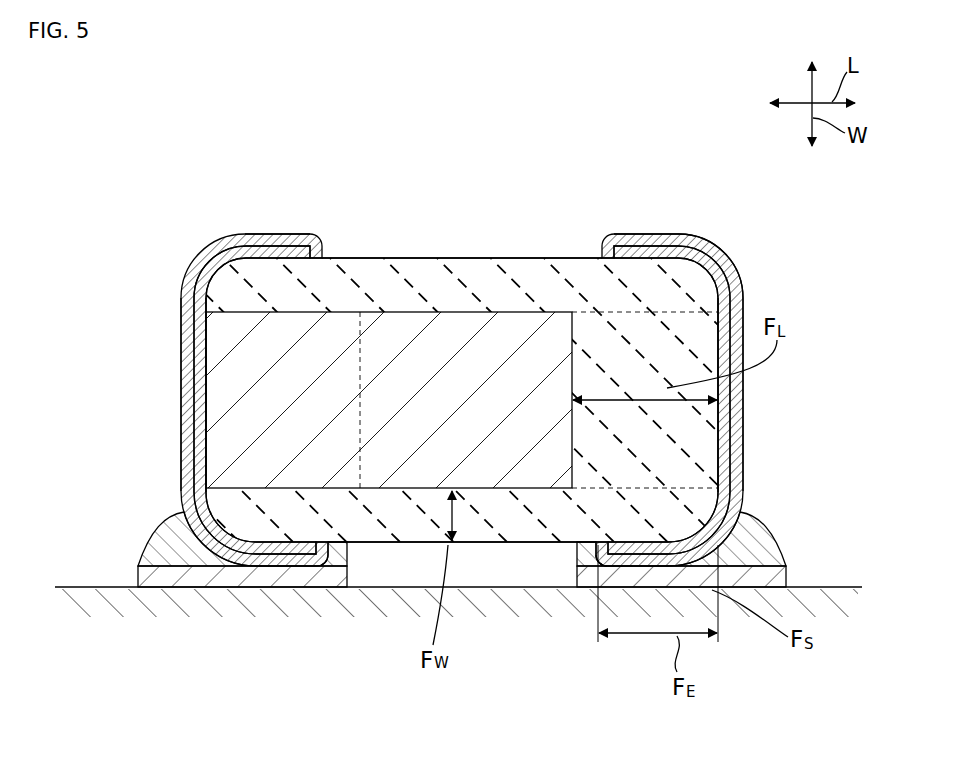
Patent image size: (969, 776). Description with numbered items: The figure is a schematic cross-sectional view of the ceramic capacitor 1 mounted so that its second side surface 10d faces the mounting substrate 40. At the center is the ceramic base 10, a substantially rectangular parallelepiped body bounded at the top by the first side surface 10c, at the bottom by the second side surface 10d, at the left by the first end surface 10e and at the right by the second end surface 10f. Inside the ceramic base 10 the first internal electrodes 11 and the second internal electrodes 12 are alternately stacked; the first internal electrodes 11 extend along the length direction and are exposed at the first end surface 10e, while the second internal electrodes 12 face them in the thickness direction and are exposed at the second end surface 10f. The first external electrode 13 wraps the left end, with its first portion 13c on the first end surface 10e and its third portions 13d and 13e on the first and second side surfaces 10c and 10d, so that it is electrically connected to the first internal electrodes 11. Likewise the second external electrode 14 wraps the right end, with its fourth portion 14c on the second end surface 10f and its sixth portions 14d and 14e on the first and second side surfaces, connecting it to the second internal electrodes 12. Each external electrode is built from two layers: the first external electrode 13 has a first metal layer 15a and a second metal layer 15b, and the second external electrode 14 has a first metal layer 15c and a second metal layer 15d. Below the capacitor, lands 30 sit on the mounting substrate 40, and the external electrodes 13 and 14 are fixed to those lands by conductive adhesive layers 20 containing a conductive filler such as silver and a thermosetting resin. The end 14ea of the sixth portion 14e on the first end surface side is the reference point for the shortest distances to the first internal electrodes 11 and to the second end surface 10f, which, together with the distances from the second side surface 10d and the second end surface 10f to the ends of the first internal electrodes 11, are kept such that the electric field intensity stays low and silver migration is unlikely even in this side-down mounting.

The ceramic capacitor 1 is at (572, 188).
The ceramic base 10 is at (508, 242).
The first side surface 10c is at (370, 258).
The second side surface 10d is at (497, 545).
The first end surface 10e is at (205, 438).
The second end surface 10f is at (720, 382).
The first internal electrodes 11 is at (537, 490).
The second internal electrodes 12 is at (733, 267).
The first external electrode 13 is at (182, 400).
The first portion 13c is at (182, 348).
The third portion 13d is at (262, 233).
The third portion 13e is at (270, 568).
The second external electrode 14 is at (745, 442).
The fourth portion 14c is at (745, 480).
The sixth portion 14d is at (627, 235).
The sixth portion 14e is at (633, 568).
The end of the sixth portion 14ea is at (572, 490).
The first metal layer 15a is at (214, 252).
The second metal layer 15b is at (233, 240).
The first metal layer 15c is at (672, 250).
The second metal layer 15d is at (720, 255).
The conductive adhesive layers 20 is at (760, 523).
The lands 30 is at (784, 575).
The mounting substrate 40 is at (102, 587).